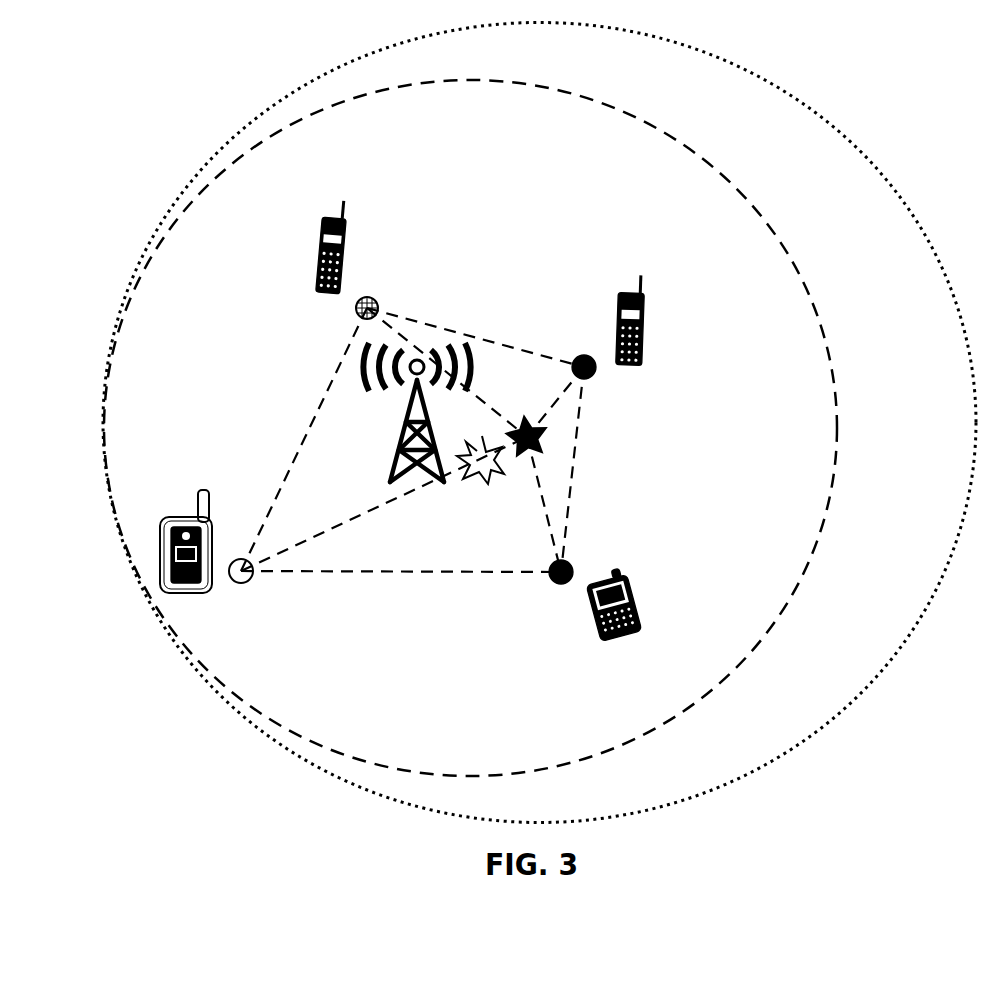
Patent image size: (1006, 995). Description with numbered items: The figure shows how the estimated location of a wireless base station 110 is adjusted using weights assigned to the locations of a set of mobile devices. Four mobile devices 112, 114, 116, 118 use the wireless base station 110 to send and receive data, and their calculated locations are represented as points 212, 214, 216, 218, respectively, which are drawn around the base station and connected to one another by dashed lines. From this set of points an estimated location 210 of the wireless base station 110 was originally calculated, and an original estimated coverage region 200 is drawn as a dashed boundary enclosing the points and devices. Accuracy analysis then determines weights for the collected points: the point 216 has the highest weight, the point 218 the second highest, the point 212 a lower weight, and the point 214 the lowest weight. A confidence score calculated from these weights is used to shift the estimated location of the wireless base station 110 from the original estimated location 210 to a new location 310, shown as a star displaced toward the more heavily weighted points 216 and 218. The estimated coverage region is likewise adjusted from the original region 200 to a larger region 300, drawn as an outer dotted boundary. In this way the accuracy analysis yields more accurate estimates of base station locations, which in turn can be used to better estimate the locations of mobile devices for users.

The wireless base station 110 is at (392, 427).
The mobile device 112 is at (319, 238).
The mobile device 114 is at (190, 511).
The mobile device 116 is at (608, 320).
The mobile device 118 is at (600, 635).
The estimated coverage region 200 is at (829, 357).
The estimated location of wireless base station 210 is at (487, 482).
The point 212 is at (377, 295).
The point 214 is at (246, 582).
The point 216 is at (596, 370).
The point 218 is at (573, 568).
The adjusted coverage region 300 is at (810, 108).
The new location 310 is at (542, 452).